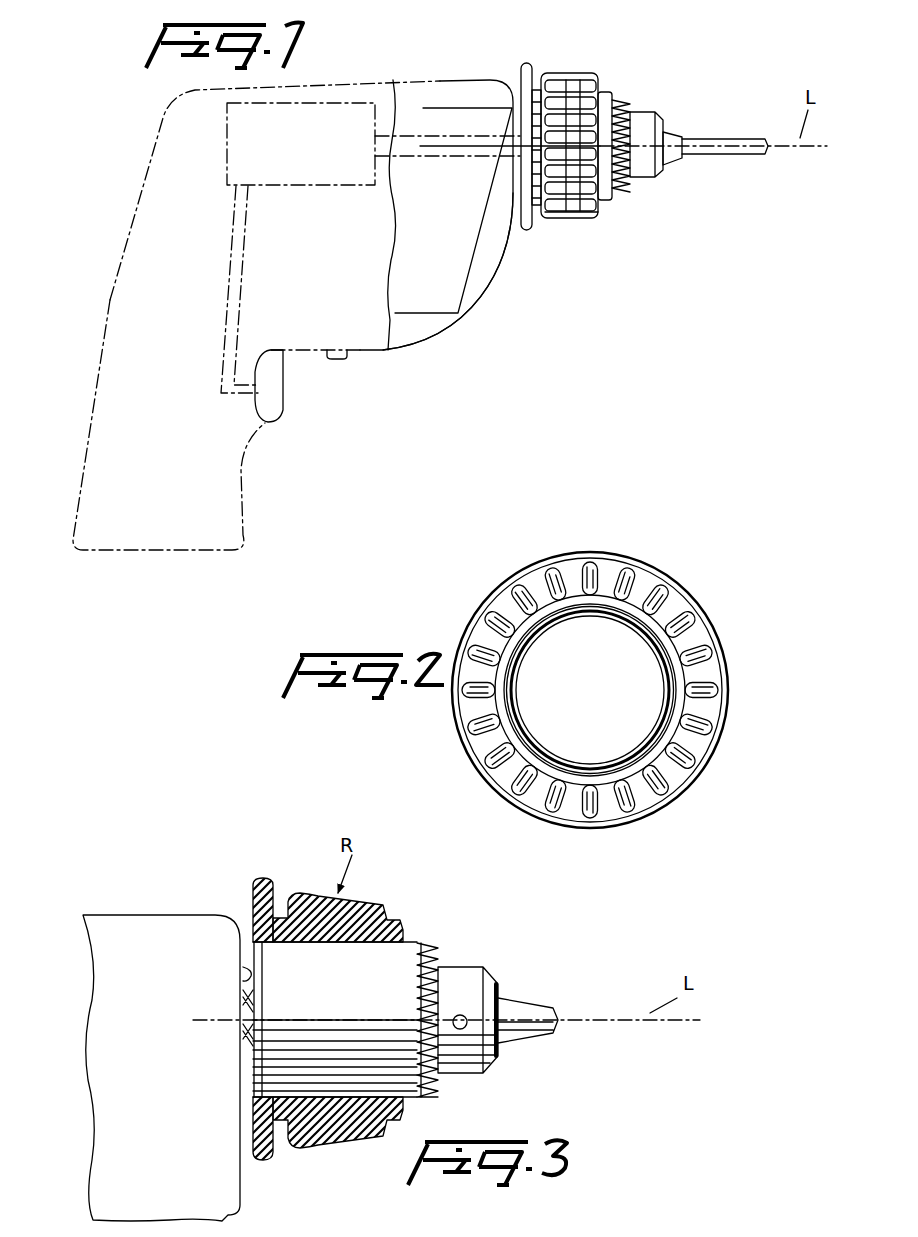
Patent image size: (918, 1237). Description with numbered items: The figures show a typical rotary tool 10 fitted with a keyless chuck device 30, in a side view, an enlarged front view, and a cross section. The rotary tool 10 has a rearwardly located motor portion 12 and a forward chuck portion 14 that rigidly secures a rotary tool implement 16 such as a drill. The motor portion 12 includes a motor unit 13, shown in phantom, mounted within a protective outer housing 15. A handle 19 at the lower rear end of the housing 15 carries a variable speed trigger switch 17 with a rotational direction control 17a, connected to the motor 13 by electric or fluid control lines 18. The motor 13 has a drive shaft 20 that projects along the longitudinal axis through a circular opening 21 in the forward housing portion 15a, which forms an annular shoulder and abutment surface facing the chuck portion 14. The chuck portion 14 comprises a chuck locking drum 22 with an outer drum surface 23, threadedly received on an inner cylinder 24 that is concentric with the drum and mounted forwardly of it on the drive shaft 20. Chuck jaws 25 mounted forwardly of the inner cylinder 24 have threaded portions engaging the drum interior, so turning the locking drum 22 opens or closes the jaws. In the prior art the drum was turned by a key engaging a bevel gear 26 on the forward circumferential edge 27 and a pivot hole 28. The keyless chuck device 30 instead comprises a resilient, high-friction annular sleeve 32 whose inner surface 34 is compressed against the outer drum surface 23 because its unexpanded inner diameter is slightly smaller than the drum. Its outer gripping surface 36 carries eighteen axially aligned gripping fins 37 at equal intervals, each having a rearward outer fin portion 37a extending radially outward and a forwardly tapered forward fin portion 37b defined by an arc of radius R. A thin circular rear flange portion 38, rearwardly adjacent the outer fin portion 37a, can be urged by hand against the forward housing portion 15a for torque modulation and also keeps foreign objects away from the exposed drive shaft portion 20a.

In FIG. 1, the rotary tool 10 is at (130, 190).
In FIG. 1, the motor portion 12 is at (362, 353).
In FIG. 1, the motor unit 13 is at (300, 188).
In FIG. 1, the chuck portion 14 is at (556, 210).
In FIG. 1, the outer housing 15 is at (355, 82).
In FIG. 3, the outer housing 15 is at (161, 1068).
In FIG. 1, the forward housing portion 15a is at (462, 305).
In FIG. 3, the forward housing portion 15a is at (243, 975).
In FIG. 1, the rotary tool implement 16 is at (740, 152).
In FIG. 1, the variable speed trigger switch 17 is at (283, 402).
In FIG. 1, the rotational direction control 17a is at (333, 360).
In FIG. 1, the control lines 18 is at (228, 298).
In FIG. 1, the handle 19 is at (243, 497).
In FIG. 1, the drive shaft 20 is at (447, 160).
In FIG. 1, the exposed drive shaft portion 20a is at (572, 220).
In FIG. 3, the exposed drive shaft portion 20a is at (242, 1030).
In FIG. 1, the circular opening 21 is at (548, 180).
In FIG. 3, the chuck locking drum 22 is at (410, 940).
In FIG. 3, the outer drum surface 23 is at (253, 905).
In FIG. 1, the inner cylinder 24 is at (646, 144).
In FIG. 3, the inner cylinder 24 is at (478, 952).
In FIG. 1, the chuck jaws 25 is at (680, 128).
In FIG. 3, the chuck jaws 25 is at (537, 1000).
In FIG. 3, the bevel gear 26 is at (433, 952).
In FIG. 3, the forward circumferential edge 27 is at (437, 1077).
In FIG. 3, the pivot hole 28 is at (467, 1027).
In FIG. 1, the keyless chuck device 30 is at (603, 66).
In FIG. 3, the annular sleeve 32 is at (413, 940).
In FIG. 2, the inner surface 34 is at (537, 728).
In FIG. 3, the inner surface 34 is at (330, 945).
In FIG. 2, the outer gripping surface 36 is at (493, 720).
In FIG. 1, the gripping fins 37 is at (606, 92).
In FIG. 2, the gripping fins 37 is at (652, 578).
In FIG. 2, the outer fin portion 37a is at (593, 568).
In FIG. 3, the outer fin portion 37a is at (303, 895).
In FIG. 2, the forward fin portion 37b is at (588, 580).
In FIG. 3, the forward fin portion 37b is at (350, 897).
In FIG. 1, the rear flange portion 38 is at (530, 205).
In FIG. 2, the rear flange portion 38 is at (718, 692).